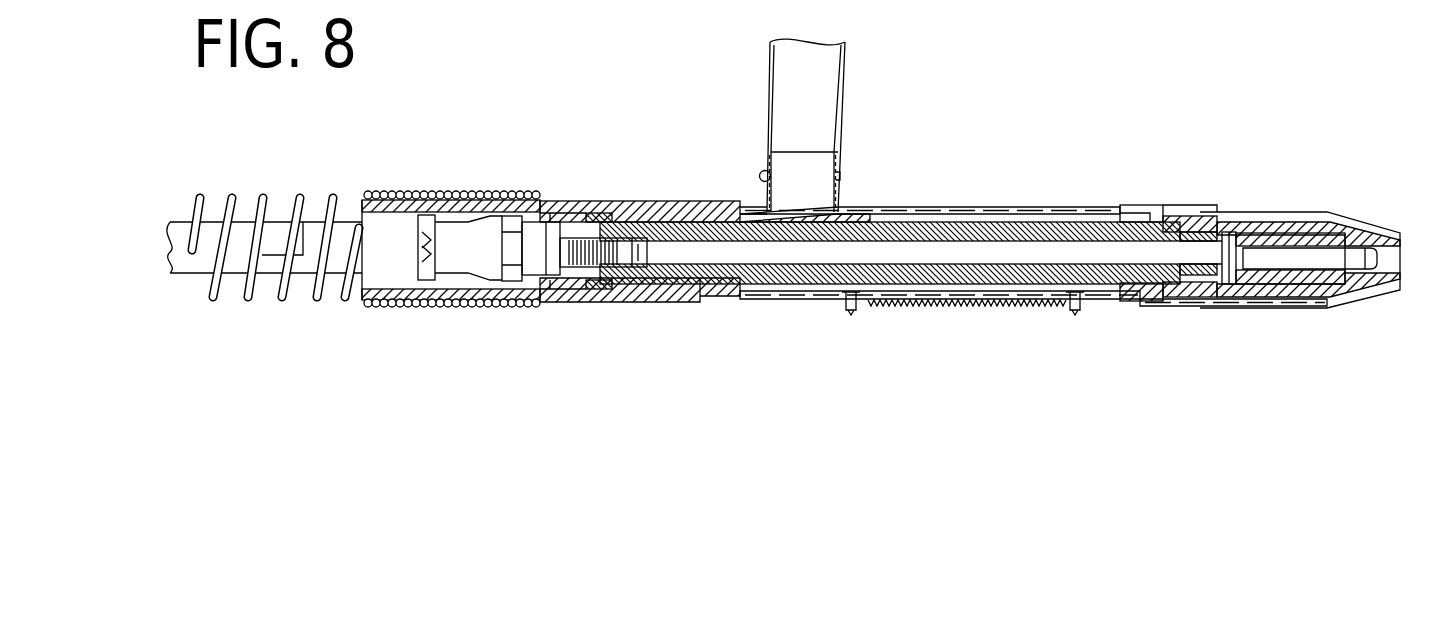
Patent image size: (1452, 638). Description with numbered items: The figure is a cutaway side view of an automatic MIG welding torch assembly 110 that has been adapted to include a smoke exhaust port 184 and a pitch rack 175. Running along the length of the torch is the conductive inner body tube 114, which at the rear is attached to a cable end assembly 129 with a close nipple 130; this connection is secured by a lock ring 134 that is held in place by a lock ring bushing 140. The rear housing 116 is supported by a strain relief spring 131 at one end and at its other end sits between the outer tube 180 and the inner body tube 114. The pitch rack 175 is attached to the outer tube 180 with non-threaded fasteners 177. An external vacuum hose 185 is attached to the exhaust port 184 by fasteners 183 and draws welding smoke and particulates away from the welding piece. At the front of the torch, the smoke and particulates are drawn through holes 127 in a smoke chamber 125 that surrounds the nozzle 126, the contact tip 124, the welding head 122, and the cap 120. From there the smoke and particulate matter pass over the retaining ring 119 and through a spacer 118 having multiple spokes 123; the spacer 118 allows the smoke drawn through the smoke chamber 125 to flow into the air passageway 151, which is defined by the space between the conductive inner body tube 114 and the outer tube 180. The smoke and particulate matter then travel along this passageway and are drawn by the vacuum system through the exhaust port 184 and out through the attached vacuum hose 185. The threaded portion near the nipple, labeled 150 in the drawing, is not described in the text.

The automatic MIG welding torch assembly 110 is at (1017, 95).
The conductive inner body tube 114 is at (960, 213).
The rear housing 116 is at (440, 191).
The spacer 118 is at (1115, 303).
The retaining ring 119 is at (1177, 213).
The cap 120 is at (1226, 231).
The welding head 122 is at (1280, 232).
The spokes 123 is at (1172, 299).
The contact tip 124 is at (1345, 308).
The smoke chamber 125 is at (1207, 309).
The nozzle 126 is at (1391, 231).
The holes 127 is at (1358, 221).
The cable end assembly 129 is at (540, 301).
The close nipple 130 is at (625, 285).
The strain relief spring 131 is at (416, 190).
The lock ring 134 is at (606, 212).
The lock ring bushing 140 is at (592, 201).
The threaded insert 150 is at (624, 237).
The air passageway 151 is at (1083, 221).
The pitch rack 175 is at (1018, 307).
The non-threaded fasteners 177 is at (845, 312).
The outer tube 180 is at (1013, 209).
The fasteners 183 is at (838, 170).
The smoke exhaust port 184 is at (761, 172).
The external vacuum hose 185 is at (843, 105).